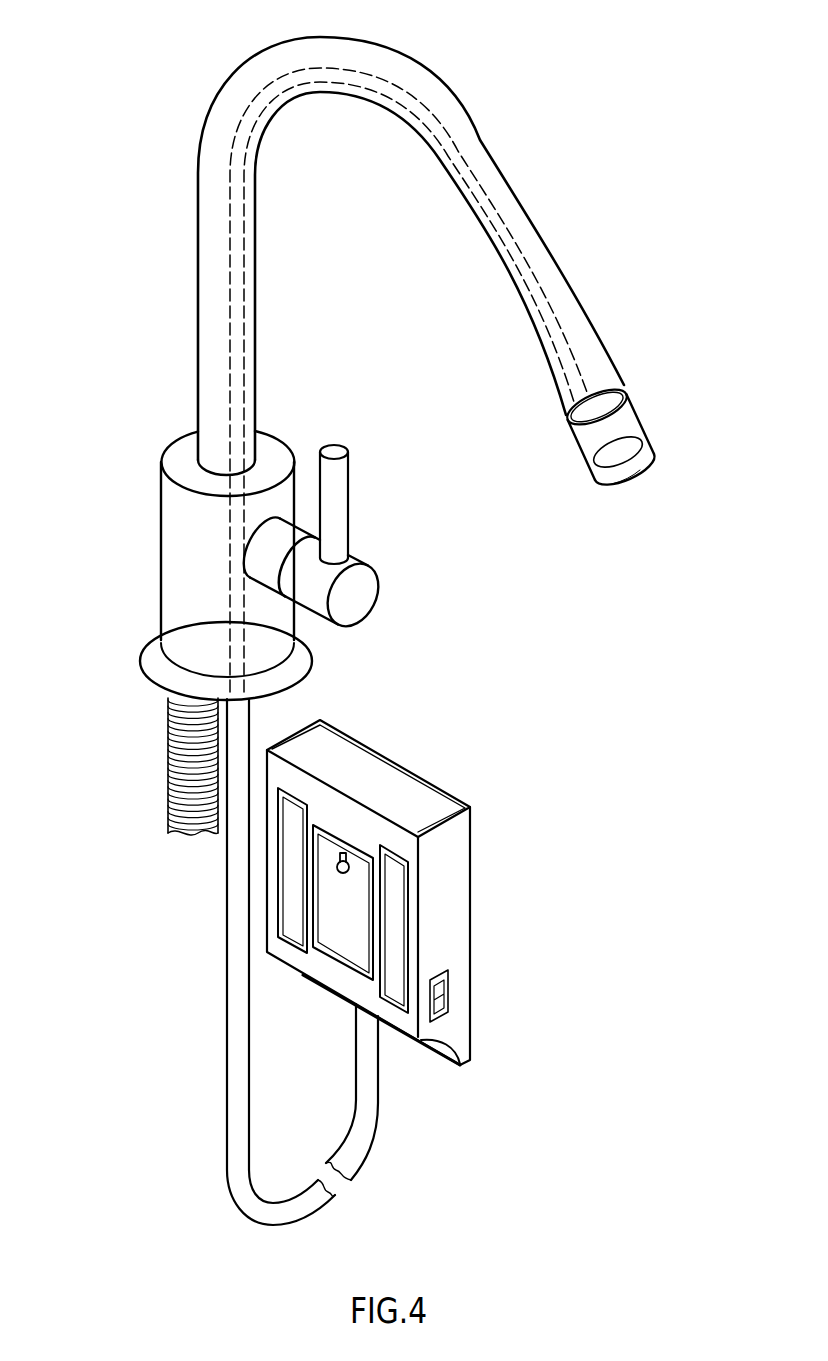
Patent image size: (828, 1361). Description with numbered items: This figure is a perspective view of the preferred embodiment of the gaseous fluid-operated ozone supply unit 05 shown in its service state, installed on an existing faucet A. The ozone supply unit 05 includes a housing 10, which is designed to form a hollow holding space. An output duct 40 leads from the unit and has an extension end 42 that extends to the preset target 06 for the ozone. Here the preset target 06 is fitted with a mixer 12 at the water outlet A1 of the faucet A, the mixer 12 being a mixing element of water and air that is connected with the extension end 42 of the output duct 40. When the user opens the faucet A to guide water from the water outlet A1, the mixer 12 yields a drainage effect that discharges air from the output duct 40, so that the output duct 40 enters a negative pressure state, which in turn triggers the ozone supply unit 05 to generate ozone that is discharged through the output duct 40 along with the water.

The faucet A is at (141, 385).
The extension end 42 is at (548, 293).
The preset target 06 is at (637, 415).
The mixer 12 is at (651, 442).
The water outlet A1 is at (648, 474).
The gaseous fluid-operated ozone supply unit 05 is at (485, 753).
The housing 10 is at (452, 901).
The output duct 40 is at (227, 917).